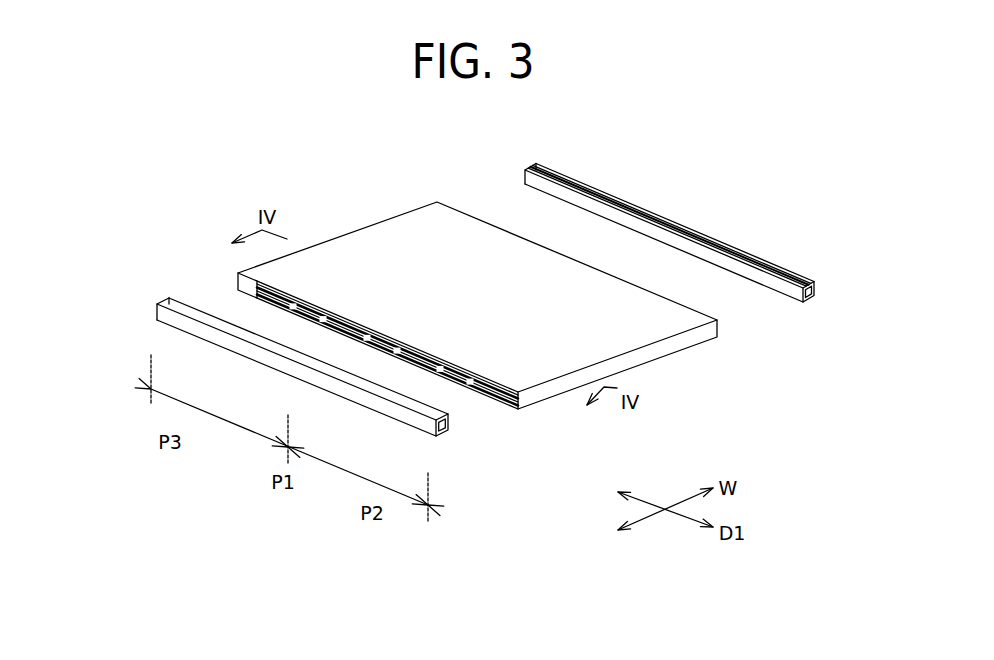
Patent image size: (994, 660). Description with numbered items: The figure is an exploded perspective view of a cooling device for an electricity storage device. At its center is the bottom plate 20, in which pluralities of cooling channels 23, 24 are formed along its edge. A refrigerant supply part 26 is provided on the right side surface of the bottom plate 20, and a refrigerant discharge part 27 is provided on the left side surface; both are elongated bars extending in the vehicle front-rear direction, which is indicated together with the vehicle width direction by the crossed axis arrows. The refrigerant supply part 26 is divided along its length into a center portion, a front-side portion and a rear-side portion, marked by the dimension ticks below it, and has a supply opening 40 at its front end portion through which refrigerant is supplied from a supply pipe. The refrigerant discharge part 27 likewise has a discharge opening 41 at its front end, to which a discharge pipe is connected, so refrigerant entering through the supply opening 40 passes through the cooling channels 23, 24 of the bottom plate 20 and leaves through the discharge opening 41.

The bottom plate 20 is at (462, 232).
The cooling channel 23 is at (437, 372).
The cooling channel 24 is at (477, 396).
The refrigerant supply part 26 is at (353, 395).
The refrigerant discharge part 27 is at (708, 243).
The supply opening 40 is at (442, 438).
The discharge opening 41 is at (805, 306).